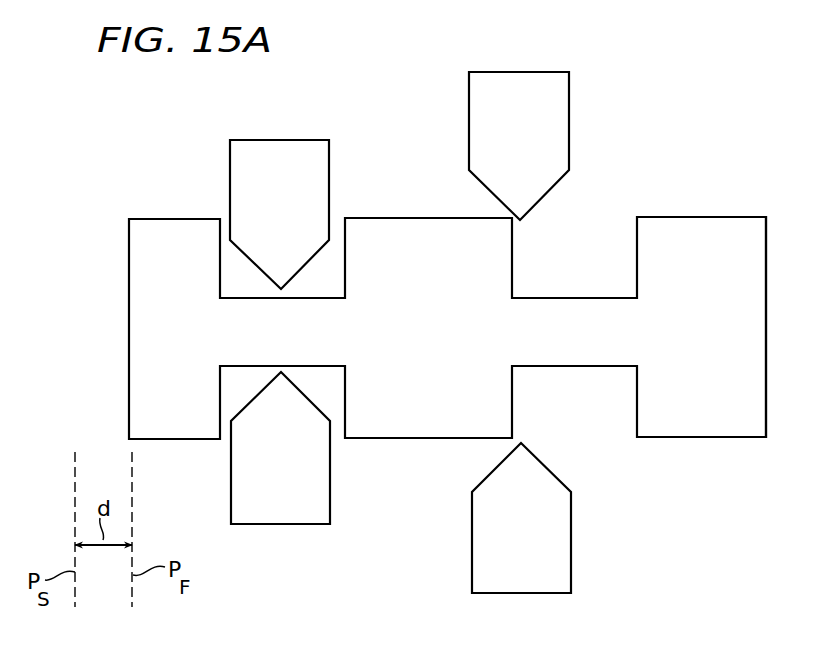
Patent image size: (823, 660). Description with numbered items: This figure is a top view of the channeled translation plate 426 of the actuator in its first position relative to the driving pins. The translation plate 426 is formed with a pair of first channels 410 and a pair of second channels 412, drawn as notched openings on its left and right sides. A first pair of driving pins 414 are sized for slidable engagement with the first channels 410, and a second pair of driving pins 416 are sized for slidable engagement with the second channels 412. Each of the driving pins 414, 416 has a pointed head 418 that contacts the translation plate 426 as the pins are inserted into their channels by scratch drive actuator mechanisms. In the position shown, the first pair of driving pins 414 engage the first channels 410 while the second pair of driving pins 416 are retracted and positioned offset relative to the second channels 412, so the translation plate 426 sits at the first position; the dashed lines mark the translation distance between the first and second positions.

The first channels 410 is at (320, 287).
The second channels 412 is at (607, 283).
The first pair of driving pins 414 is at (275, 153).
The second pair of driving pins 416 is at (518, 82).
The pointed head 418 is at (537, 183).
The translation plate 426 is at (698, 232).